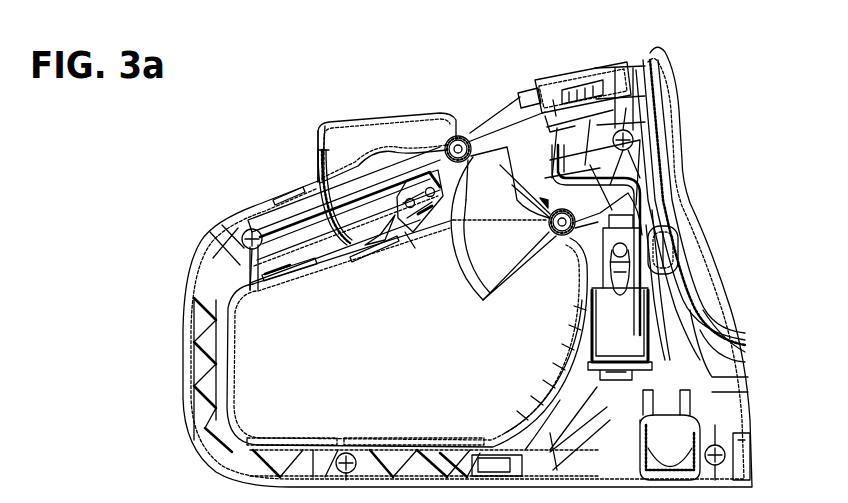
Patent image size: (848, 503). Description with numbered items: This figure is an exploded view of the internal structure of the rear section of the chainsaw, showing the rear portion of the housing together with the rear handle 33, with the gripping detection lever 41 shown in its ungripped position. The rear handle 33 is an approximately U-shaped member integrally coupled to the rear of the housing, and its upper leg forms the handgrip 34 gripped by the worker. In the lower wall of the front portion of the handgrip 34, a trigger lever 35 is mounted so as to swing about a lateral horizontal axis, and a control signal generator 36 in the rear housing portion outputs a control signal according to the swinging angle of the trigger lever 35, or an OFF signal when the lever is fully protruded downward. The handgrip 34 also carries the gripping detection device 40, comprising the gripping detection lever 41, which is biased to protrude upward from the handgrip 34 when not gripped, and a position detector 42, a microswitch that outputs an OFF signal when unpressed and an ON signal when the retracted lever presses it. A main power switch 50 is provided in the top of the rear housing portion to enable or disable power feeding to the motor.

The rear handle 33 is at (229, 199).
The handgrip 34 is at (277, 218).
The trigger lever 35 is at (488, 267).
The control signal generator 36 is at (597, 250).
The gripping detection device 40 is at (377, 98).
The gripping detection lever 41 is at (333, 125).
The position detector 42 is at (410, 237).
The main power switch 50 is at (572, 77).